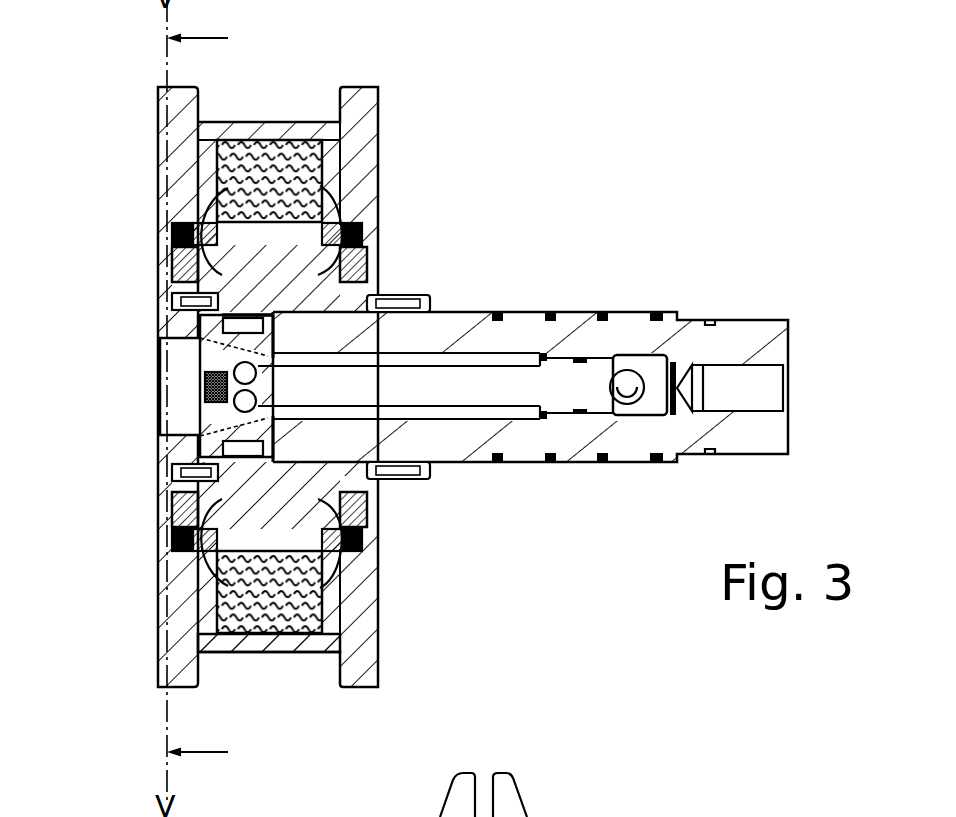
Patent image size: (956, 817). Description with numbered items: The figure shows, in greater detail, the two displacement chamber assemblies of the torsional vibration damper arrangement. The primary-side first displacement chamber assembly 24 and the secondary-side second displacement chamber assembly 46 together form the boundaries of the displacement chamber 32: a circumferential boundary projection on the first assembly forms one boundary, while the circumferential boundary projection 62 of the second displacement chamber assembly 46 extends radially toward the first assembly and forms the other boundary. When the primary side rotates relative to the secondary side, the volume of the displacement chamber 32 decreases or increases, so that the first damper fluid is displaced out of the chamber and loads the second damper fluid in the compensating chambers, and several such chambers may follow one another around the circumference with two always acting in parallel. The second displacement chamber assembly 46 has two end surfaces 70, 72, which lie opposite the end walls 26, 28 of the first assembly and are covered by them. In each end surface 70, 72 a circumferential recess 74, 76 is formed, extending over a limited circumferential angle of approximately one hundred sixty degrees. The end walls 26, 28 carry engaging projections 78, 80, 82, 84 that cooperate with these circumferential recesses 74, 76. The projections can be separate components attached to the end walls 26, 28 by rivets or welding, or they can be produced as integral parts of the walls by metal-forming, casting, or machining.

The first displacement chamber assembly 24 is at (416, 380).
The end wall 26 is at (162, 204).
The end wall 28 is at (380, 182).
The displacement chamber 32 is at (288, 603).
The second displacement chamber assembly 46 is at (342, 315).
The circumferential boundary projection 62 is at (530, 805).
The end surface 70 is at (163, 530).
The end surface 72 is at (375, 528).
The circumferential recess 74 is at (333, 268).
The circumferential recess 76 is at (358, 598).
The engaging projection 78 is at (165, 280).
The engaging projection 80 is at (168, 503).
The engaging projection 82 is at (378, 262).
The engaging projection 84 is at (383, 491).